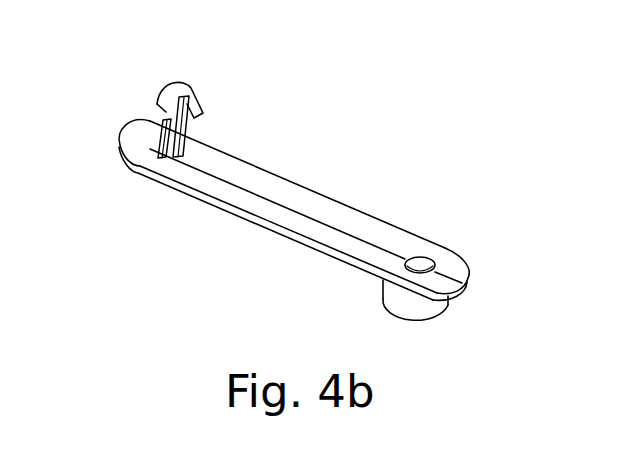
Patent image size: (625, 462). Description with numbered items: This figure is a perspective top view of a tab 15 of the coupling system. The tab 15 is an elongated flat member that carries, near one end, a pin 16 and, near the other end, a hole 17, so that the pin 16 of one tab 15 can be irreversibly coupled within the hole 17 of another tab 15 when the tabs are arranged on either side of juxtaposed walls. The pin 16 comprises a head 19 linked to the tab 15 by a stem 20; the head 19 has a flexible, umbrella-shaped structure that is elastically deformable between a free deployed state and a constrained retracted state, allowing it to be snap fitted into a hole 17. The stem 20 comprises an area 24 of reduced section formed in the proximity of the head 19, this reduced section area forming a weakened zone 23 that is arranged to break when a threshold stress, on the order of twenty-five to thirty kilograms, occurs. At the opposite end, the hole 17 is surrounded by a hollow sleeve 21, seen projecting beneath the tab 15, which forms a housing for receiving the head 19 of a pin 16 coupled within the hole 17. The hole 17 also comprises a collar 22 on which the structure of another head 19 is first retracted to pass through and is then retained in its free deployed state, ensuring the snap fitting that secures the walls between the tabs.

The tab 15 is at (286, 192).
The pin 16 is at (145, 65).
The head 19 is at (170, 95).
The stem 20 is at (153, 149).
The hollow sleeve 21 is at (420, 308).
The hole 17 is at (468, 217).
The collar 22 is at (420, 263).
The weakened zone 23 is at (247, 127).
The area of reduced section 24 is at (183, 126).